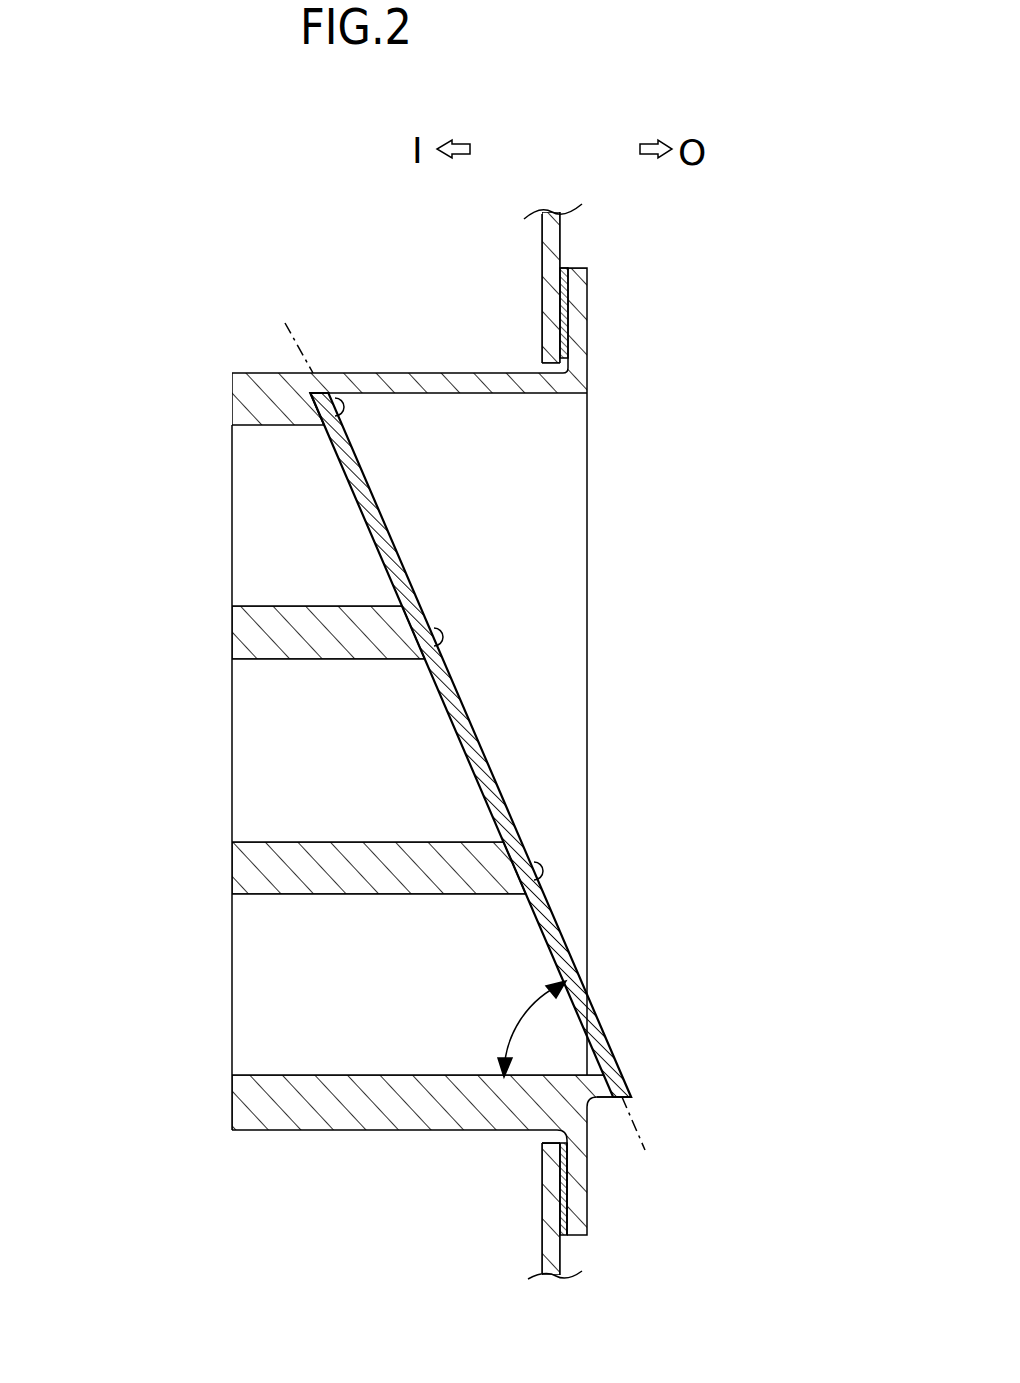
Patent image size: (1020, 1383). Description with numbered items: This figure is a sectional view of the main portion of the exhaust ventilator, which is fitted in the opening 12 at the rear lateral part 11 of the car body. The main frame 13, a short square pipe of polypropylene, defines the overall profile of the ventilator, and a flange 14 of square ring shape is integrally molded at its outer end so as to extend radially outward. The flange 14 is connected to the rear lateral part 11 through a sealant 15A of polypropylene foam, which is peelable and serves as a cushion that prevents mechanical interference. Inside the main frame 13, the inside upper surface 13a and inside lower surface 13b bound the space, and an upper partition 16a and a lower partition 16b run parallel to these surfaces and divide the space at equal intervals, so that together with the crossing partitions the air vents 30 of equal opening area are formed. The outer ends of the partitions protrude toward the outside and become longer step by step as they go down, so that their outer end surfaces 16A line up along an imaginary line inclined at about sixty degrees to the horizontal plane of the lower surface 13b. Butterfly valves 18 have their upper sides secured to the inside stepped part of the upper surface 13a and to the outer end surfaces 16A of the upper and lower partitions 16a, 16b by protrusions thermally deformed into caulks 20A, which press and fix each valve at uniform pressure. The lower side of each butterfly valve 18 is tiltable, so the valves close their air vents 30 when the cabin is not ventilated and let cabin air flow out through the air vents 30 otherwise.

The rear lateral part 11 is at (548, 246).
The opening 12 is at (537, 367).
The main frame 13 is at (328, 1128).
The inside upper surface 13a is at (275, 426).
The inside lower surface 13b is at (312, 1075).
The flange 14 is at (577, 290).
The sealant 15A is at (568, 314).
The upper partition 16a is at (268, 640).
The lower partition 16b is at (252, 871).
The outer end surface 16A is at (333, 437).
The butterfly valve 18 is at (373, 503).
The caulk 20A is at (345, 400).
The air vent 30 is at (252, 572).